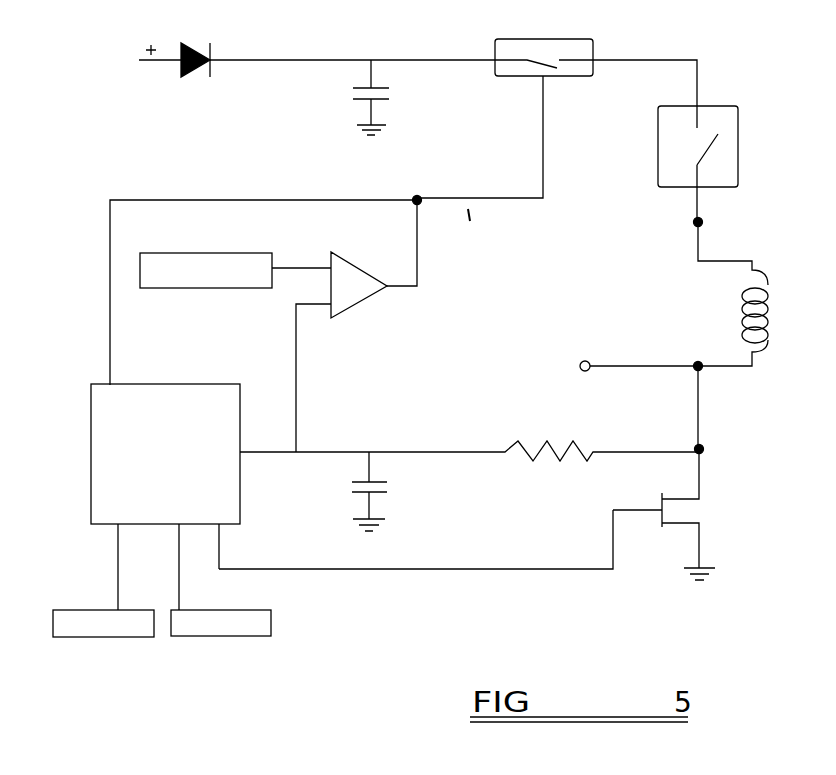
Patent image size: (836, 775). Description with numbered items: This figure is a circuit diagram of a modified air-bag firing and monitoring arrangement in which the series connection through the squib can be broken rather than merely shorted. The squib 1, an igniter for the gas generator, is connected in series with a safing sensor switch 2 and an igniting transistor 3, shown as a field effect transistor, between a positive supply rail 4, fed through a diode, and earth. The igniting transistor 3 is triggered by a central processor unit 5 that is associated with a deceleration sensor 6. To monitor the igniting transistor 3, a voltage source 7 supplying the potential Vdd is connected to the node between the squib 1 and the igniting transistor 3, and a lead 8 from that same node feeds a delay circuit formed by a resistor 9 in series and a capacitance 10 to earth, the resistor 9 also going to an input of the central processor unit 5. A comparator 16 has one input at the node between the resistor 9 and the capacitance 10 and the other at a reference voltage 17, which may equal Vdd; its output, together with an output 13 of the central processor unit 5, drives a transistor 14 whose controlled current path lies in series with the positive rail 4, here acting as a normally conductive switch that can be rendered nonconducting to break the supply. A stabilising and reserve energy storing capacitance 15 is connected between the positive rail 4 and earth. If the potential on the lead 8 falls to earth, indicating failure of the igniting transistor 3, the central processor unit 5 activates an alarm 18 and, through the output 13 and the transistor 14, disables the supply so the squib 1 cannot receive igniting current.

The squib 1 is at (768, 313).
The safing sensor switch 2 is at (738, 160).
The igniting transistor 3 is at (687, 512).
The positive supply rail 4 is at (625, 60).
The central processor unit 5 is at (91, 488).
The deceleration sensor 6 is at (84, 638).
The voltage source 7 is at (606, 361).
The lead 8 is at (660, 448).
The resistor 9 is at (553, 455).
The capacitance 10 is at (387, 492).
The output 13 is at (110, 328).
The transistor 14 is at (505, 99).
The stabilising and reserve energy storing capacitance 15 is at (356, 100).
The comparator 16 is at (352, 255).
The reference voltage 17 is at (220, 288).
The alarm 18 is at (248, 636).